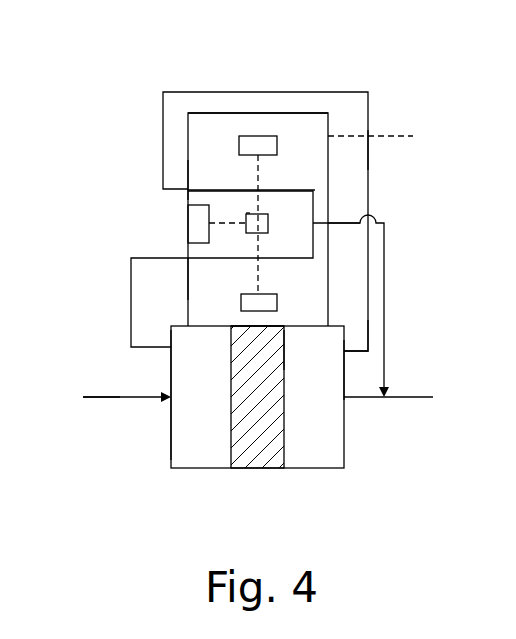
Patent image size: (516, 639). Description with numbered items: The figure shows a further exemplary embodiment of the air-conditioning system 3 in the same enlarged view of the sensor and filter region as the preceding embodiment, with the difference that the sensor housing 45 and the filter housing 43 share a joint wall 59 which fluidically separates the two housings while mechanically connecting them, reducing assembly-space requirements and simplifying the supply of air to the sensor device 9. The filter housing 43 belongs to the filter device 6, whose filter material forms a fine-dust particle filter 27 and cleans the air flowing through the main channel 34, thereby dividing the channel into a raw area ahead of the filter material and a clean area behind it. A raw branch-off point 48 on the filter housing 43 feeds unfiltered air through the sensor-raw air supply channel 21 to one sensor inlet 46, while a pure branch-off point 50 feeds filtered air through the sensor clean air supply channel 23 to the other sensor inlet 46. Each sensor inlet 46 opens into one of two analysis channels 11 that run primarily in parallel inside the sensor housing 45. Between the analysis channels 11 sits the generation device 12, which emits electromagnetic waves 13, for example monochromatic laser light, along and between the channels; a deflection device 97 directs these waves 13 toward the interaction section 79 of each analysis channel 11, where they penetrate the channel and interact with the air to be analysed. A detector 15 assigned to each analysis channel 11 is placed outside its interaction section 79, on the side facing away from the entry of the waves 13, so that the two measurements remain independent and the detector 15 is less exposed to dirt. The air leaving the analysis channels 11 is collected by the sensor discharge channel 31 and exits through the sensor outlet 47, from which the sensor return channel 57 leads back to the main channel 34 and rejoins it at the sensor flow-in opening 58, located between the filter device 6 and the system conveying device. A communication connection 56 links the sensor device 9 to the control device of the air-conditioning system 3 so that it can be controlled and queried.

The air-conditioning system 3 is at (90, 84).
The sensor housing 45 is at (204, 84).
The sensor device 9 is at (313, 105).
The detector 15 is at (258, 136).
The communication connection 56 is at (386, 136).
The sensor clean air supply channel 23 is at (368, 150).
The sensor inlet 46 is at (187, 187).
The analysis channel 11 is at (287, 190).
The deflection device 97 is at (246, 213).
The generation device 12 is at (193, 237).
The interaction section 79 is at (260, 191).
The sensor discharge channel 31 is at (315, 193).
The sensor outlet 47 is at (330, 225).
The electromagnetic waves 13 is at (232, 227).
The sensor-raw air supply channel 21 is at (131, 300).
The sensor return channel 57 is at (368, 327).
The filter housing 43 is at (194, 470).
The raw branch-off point 48 is at (171, 350).
The joint wall 59 is at (316, 328).
The pure branch-off point 50 is at (344, 350).
The sensor flow-in opening 58 is at (380, 400).
The main channel 34 is at (122, 398).
The fine-dust particle filter 27 is at (286, 453).
The filter device 6 is at (264, 481).